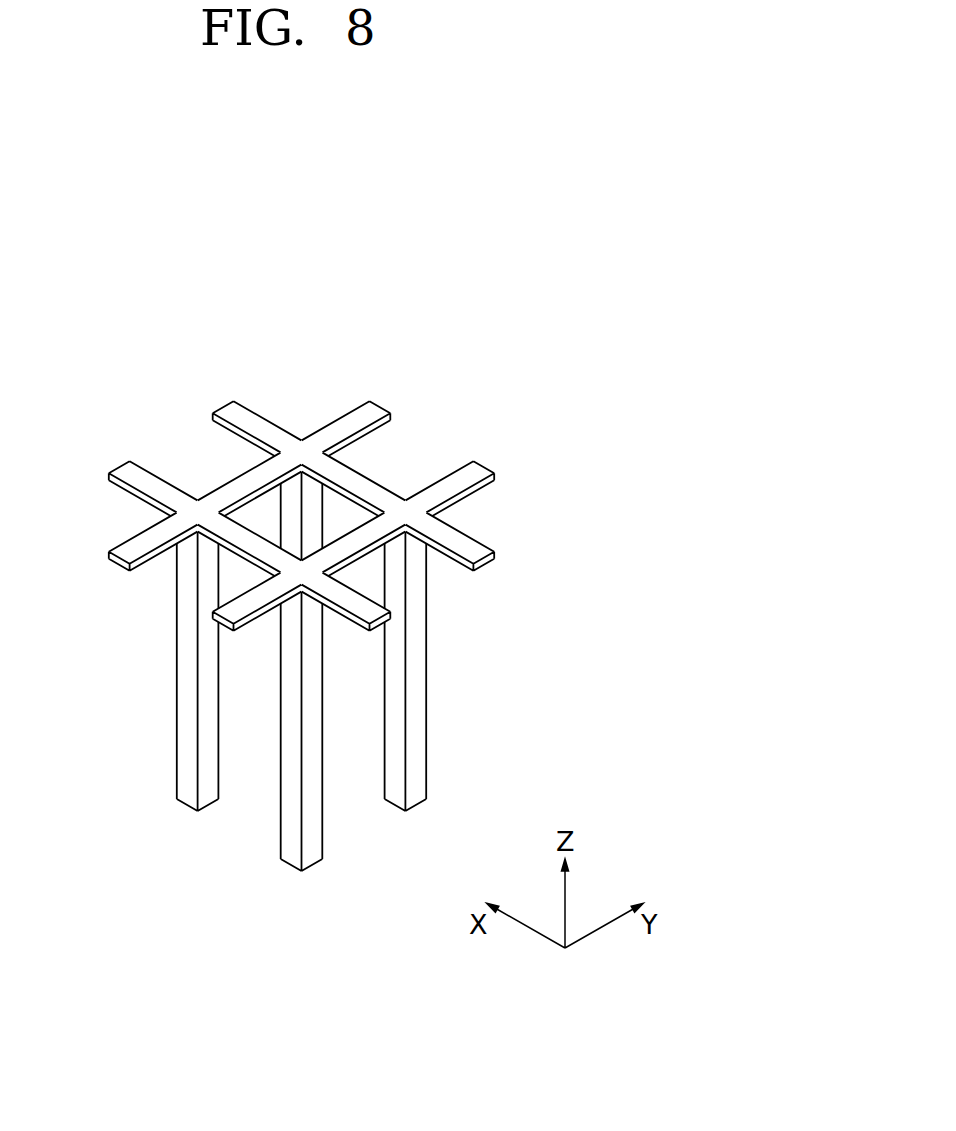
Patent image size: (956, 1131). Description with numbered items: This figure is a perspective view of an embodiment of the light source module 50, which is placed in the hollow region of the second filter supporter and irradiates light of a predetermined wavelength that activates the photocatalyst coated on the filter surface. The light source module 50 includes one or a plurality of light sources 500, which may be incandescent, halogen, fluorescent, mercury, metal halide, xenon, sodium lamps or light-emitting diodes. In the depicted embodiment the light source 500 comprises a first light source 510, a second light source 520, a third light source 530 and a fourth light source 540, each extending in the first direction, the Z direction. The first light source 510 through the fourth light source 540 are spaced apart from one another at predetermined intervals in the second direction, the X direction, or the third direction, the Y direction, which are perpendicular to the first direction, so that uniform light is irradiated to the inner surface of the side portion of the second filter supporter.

The light source module 50 is at (469, 393).
The light source 500 is at (490, 644).
The first light source 510 is at (418, 713).
The second light source 520 is at (315, 833).
The third light source 530 is at (185, 752).
The fourth light source 540 is at (315, 515).